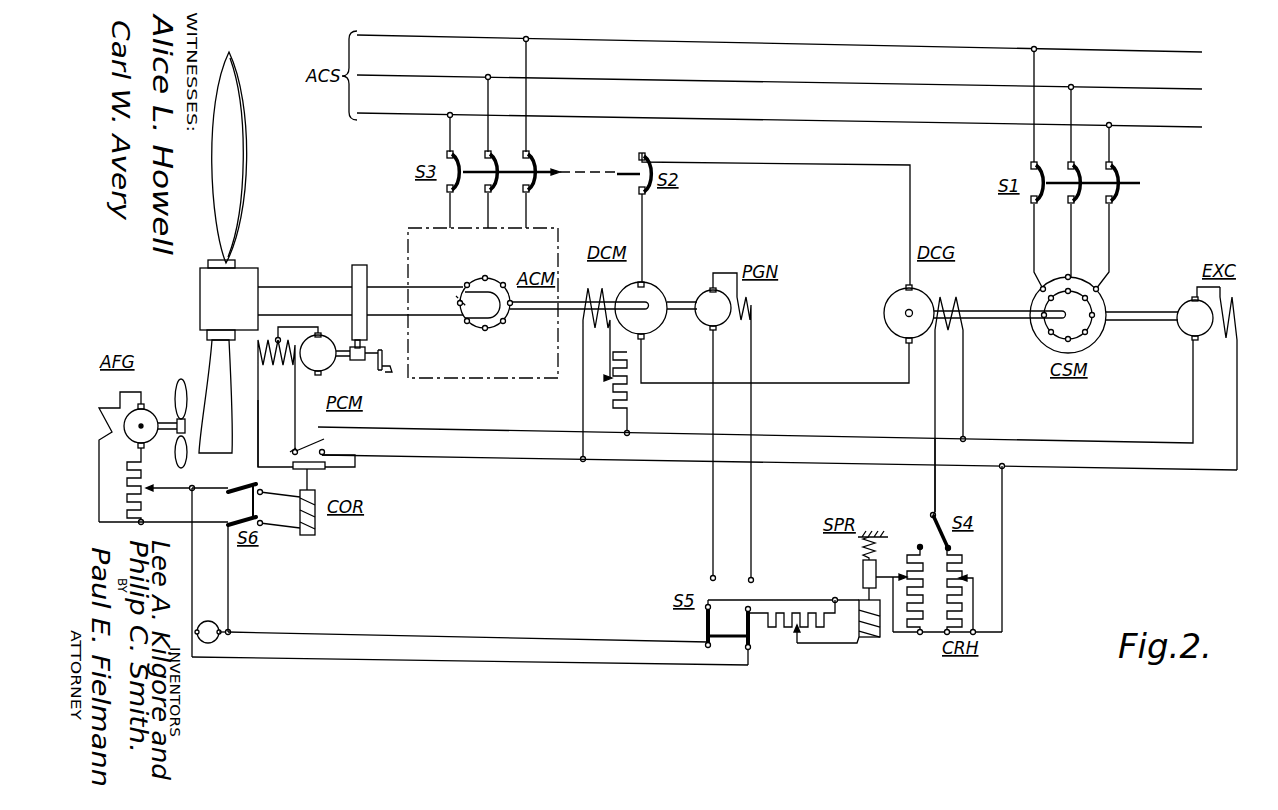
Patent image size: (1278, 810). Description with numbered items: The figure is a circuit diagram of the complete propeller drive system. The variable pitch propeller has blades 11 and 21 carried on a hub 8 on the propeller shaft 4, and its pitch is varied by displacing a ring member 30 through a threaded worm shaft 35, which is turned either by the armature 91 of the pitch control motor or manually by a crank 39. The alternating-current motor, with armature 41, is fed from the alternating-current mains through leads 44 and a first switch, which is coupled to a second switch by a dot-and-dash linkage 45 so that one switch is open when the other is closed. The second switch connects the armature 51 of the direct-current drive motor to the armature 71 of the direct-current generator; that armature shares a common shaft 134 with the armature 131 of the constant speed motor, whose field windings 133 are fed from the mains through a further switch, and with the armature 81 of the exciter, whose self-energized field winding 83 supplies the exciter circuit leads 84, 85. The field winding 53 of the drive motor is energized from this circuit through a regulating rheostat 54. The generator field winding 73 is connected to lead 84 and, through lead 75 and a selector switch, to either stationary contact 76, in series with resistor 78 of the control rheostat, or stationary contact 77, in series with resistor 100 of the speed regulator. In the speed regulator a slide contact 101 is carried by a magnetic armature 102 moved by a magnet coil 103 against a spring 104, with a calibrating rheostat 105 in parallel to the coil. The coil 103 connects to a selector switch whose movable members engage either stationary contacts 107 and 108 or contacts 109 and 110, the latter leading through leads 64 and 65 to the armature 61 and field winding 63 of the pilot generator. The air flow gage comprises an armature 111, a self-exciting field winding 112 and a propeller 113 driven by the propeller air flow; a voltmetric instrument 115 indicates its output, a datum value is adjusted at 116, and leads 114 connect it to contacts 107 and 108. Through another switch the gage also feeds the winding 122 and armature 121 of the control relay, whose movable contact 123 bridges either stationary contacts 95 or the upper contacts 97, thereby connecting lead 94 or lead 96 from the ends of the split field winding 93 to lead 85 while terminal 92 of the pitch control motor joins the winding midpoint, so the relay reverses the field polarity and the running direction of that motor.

The propeller shaft 4 is at (383, 322).
The gear housing 8 is at (200, 301).
The propeller blade 11 is at (243, 176).
The propeller blade 21 is at (209, 350).
The ring member 30 is at (352, 272).
The threaded worm shaft 35 is at (360, 361).
The crank 39 is at (389, 380).
The armature 41 is at (478, 329).
The leads 44 is at (526, 129).
The dot and dash line 45 is at (597, 168).
The armature 51 is at (636, 286).
The field winding 53 is at (592, 292).
The regulating rheostat 54 is at (628, 396).
The armature 61 is at (698, 323).
The field winding 63 is at (754, 304).
The lead 64 is at (711, 519).
The lead 65 is at (752, 519).
The armature 71 is at (914, 290).
The field winding 73 is at (958, 306).
The lead 75 is at (935, 422).
The stationary contact 76 is at (951, 548).
The stationary contact 77 is at (930, 534).
The resistor 78 is at (950, 604).
The armature 81 is at (1191, 301).
The self-energized field winding 83 is at (1240, 301).
The exciter lead 84 is at (453, 432).
The exciter lead 85 is at (450, 460).
The armature 91 is at (297, 364).
The terminal 92 is at (288, 396).
The split field winding 93 is at (257, 358).
The lead 94 is at (259, 398).
The stationary contacts 95 is at (316, 470).
The lead 96 is at (294, 448).
The upper contacts 97 is at (325, 450).
The resistor 100 is at (918, 549).
The slide contact 101 is at (904, 575).
The magnetic armature 102 is at (862, 578).
The magnet coil 103 is at (873, 639).
The spring 104 is at (862, 550).
The calibrating rheostat 105 is at (811, 605).
The stationary contact 107 is at (706, 646).
The stationary contact 108 is at (751, 648).
The stationary contact 109 is at (710, 578).
The stationary contact 110 is at (753, 579).
The armature 111 is at (148, 412).
The self-exciting field winding 112 is at (104, 412).
The propeller 113 is at (172, 458).
The leads 114 is at (272, 657).
The voltmetric measuring instrument 115 is at (210, 620).
The datum adjusting means 116 is at (127, 472).
The armature 121 is at (315, 532).
The winding 122 is at (300, 504).
The movable contact 123 is at (291, 452).
The armature 131 is at (1097, 330).
The field windings 133 is at (1101, 290).
The common shaft 134 is at (988, 322).